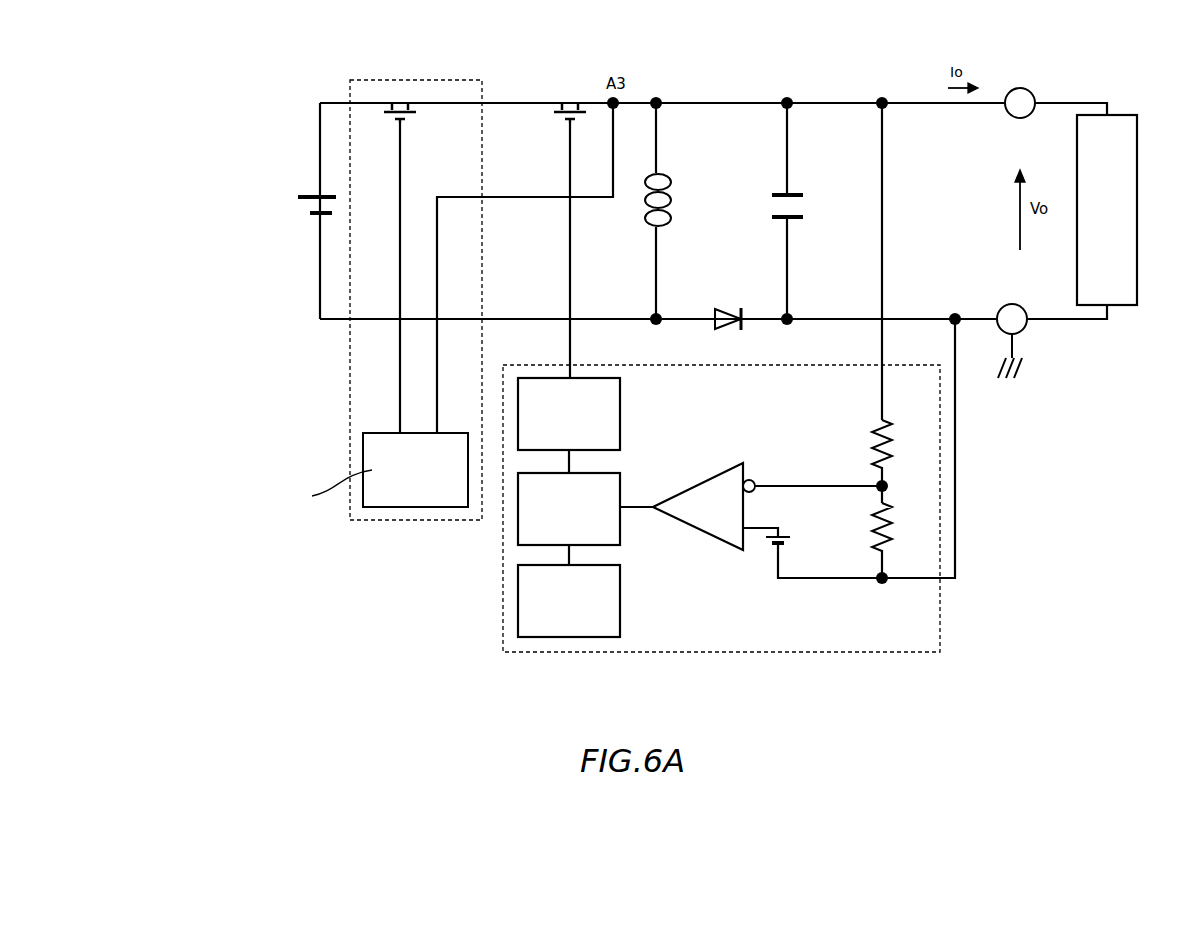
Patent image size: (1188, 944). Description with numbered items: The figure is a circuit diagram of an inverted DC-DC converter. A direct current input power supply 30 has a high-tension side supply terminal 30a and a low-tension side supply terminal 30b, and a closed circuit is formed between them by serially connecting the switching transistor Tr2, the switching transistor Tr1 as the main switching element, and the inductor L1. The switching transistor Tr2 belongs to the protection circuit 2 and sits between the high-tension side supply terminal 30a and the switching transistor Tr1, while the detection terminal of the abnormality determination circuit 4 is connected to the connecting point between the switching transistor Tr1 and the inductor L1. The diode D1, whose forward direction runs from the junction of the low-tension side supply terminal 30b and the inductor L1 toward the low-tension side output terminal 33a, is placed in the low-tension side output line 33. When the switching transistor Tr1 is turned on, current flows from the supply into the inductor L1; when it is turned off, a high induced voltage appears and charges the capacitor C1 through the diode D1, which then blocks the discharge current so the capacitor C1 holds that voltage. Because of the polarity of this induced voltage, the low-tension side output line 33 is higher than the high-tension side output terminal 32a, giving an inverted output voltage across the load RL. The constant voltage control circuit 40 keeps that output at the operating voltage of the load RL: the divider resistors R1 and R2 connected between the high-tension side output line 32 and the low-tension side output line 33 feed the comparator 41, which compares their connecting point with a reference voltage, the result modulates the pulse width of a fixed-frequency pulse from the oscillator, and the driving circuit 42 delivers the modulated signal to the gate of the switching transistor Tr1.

The protection circuit 2 is at (478, 74).
The abnormality determination circuit 4 is at (431, 508).
The direct current input power supply 30 is at (196, 164).
The high-tension side supply terminal 30a is at (299, 197).
The low-tension side supply terminal 30b is at (310, 213).
The high-tension side output line 32 is at (912, 102).
The high-tension side output terminal 32a is at (1021, 92).
The low-tension side output line 33 is at (985, 316).
The low-tension side output terminal 33a is at (1030, 356).
The constant voltage control circuit 40 is at (943, 617).
The comparator 41 is at (704, 506).
The driving circuit 42 is at (620, 426).
The switching transistor Tr1 is at (566, 86).
The switching transistor Tr2 is at (402, 86).
The inductor L1 is at (674, 211).
The capacitor C1 is at (809, 211).
The diode D1 is at (722, 305).
The divider resistor R1 is at (898, 444).
The divider resistor R2 is at (898, 527).
The load RL is at (1107, 210).